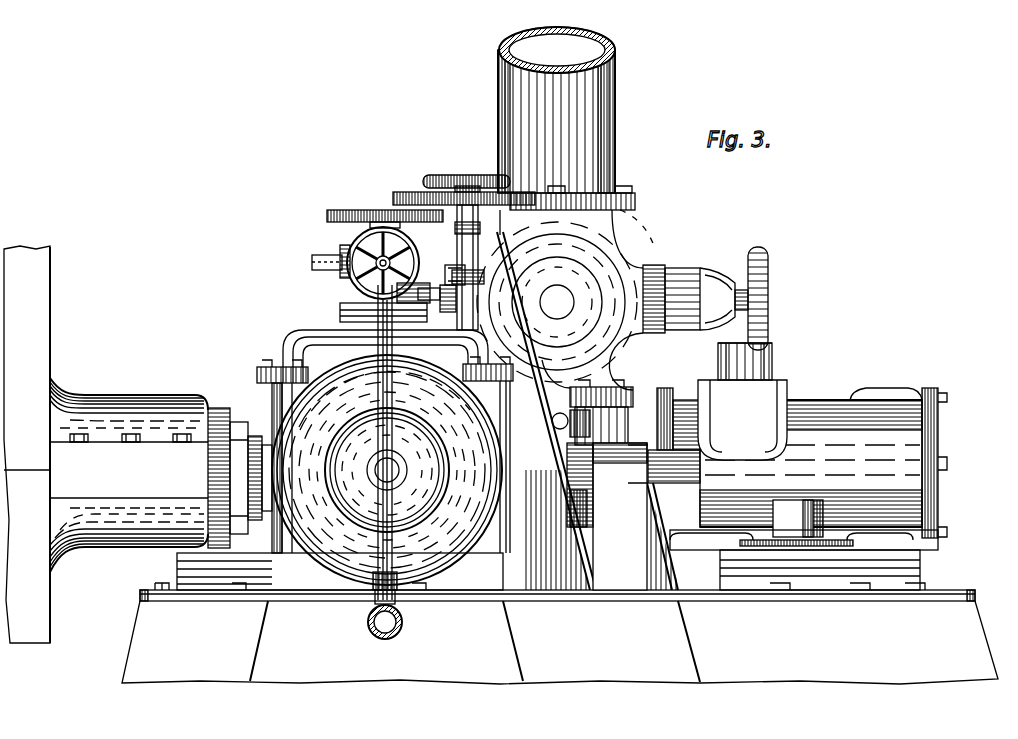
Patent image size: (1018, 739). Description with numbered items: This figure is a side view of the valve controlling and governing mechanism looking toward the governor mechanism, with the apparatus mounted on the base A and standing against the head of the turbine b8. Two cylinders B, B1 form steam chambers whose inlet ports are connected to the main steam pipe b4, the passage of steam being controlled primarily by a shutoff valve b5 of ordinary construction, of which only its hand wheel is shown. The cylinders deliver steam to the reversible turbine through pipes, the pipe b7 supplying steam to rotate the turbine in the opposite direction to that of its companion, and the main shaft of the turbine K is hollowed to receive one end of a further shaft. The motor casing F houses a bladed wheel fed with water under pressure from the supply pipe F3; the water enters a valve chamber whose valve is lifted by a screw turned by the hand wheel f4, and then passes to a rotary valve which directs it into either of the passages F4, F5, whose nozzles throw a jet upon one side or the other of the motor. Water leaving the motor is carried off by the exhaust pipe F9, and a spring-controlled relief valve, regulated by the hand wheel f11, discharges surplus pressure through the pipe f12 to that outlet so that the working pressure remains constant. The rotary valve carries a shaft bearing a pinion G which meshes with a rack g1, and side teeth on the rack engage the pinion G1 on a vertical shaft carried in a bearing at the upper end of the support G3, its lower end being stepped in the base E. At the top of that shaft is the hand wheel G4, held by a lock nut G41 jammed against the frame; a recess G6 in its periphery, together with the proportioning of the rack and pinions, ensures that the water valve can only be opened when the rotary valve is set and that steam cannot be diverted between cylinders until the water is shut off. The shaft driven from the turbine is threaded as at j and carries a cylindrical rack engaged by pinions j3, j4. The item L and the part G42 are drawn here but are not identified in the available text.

The head of the turbine b8 is at (51, 293).
The cylinder B is at (240, 404).
The main shaft of the turbine K is at (258, 408).
The pump bed L is at (263, 503).
The base E is at (461, 601).
The base A is at (752, 620).
The motor casing F is at (340, 510).
The pipe f12 is at (385, 381).
The passage F4 is at (277, 366).
The passage F5 is at (482, 346).
The exhaust pipe F9 is at (368, 627).
The hand wheel f11 is at (348, 282).
The supply pipe F3 is at (312, 263).
The hand wheel f4 is at (328, 216).
The recess G6 is at (420, 195).
The hand wheel G4 is at (397, 197).
The upper gear G42 is at (470, 175).
The lock nut G41 is at (424, 180).
The rack g1 is at (449, 272).
The pinion G1 is at (468, 273).
The pinion G is at (457, 295).
The main steam pipe b4 is at (566, 118).
The pinion j3 is at (610, 387).
The support G3 is at (588, 411).
The pinion j4 is at (580, 512).
The thread j is at (665, 435).
The cylinder B1 is at (810, 400).
The pipe b7 is at (777, 356).
The shutoff valve b5 is at (684, 270).